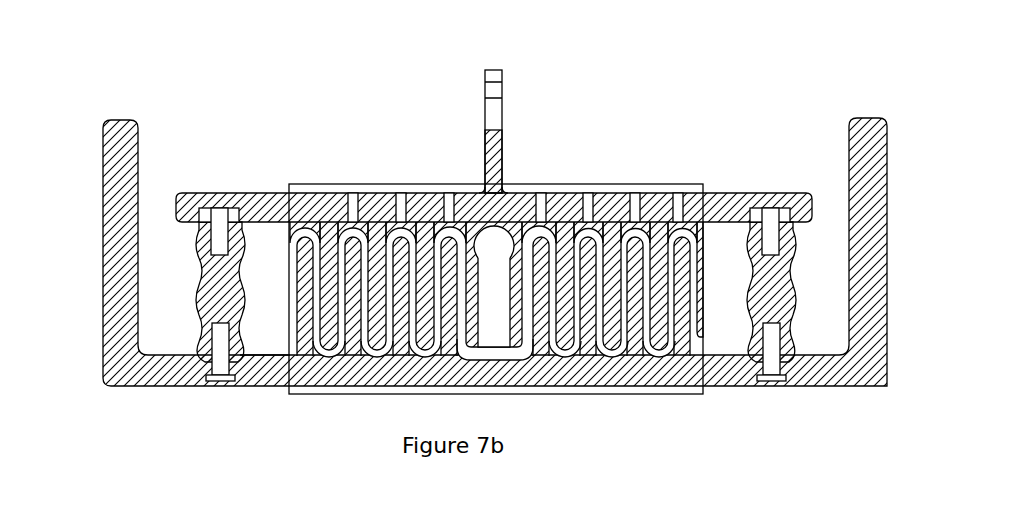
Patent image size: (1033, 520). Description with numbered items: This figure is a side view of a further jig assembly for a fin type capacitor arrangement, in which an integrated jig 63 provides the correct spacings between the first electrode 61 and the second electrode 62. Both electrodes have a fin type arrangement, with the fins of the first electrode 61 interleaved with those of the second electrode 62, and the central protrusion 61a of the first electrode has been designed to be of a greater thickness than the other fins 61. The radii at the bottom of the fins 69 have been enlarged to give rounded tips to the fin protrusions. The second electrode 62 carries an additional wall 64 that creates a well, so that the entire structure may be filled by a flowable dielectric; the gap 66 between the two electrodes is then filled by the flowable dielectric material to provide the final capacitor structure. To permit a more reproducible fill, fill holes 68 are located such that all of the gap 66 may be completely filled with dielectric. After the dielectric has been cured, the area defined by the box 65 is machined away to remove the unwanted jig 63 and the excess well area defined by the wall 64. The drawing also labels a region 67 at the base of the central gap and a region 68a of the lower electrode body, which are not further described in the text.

The first electrode 61 is at (377, 228).
The central protrusion 61a is at (476, 225).
The second electrode 62 is at (353, 323).
The integrated jig 63 is at (215, 283).
The additional wall 64 is at (111, 180).
The box 65 is at (677, 184).
The gap 66 is at (338, 230).
The channel 67 is at (517, 375).
The fill holes 68 is at (587, 200).
The base plate 68a is at (246, 378).
The fins 69 is at (648, 352).